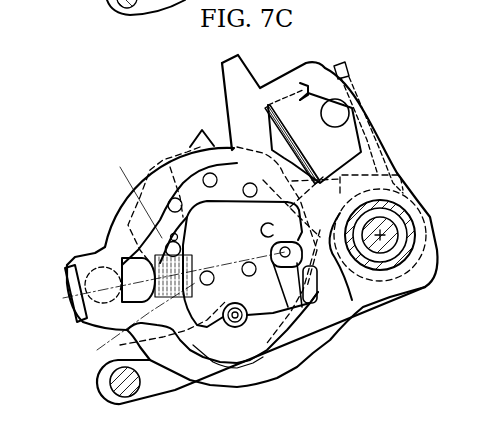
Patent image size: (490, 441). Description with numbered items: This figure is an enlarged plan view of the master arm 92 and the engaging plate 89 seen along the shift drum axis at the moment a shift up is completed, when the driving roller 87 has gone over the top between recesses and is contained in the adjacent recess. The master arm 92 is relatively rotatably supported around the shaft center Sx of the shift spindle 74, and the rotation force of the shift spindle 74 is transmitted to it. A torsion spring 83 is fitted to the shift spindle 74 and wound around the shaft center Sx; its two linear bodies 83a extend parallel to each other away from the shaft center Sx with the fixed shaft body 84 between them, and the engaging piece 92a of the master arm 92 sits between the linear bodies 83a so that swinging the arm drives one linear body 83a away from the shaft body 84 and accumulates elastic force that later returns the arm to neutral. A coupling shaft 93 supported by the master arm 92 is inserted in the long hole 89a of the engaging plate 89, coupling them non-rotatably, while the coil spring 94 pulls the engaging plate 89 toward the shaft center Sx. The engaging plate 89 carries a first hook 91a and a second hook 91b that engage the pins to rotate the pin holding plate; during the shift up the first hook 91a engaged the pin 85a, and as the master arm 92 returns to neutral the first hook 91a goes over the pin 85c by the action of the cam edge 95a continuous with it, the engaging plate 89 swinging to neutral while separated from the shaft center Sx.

The master arm 92 is at (397, 157).
The engaging piece 92a is at (306, 82).
The torsion spring 83 is at (384, 282).
The linear body 83a is at (278, 125).
The shaft body 84 is at (348, 110).
The shift spindle 74 is at (412, 215).
The shaft center Sx is at (412, 250).
The driving roller 87 is at (253, 322).
The engaging plate 89 is at (168, 160).
The long hole 89a is at (125, 262).
The pin 85a is at (181, 248).
The pin 85c is at (168, 205).
The first hook 91a is at (179, 235).
The second hook 91b is at (197, 318).
The coupling shaft 93 is at (82, 262).
The coil spring 94 is at (135, 323).
The cam edge 95a is at (163, 165).